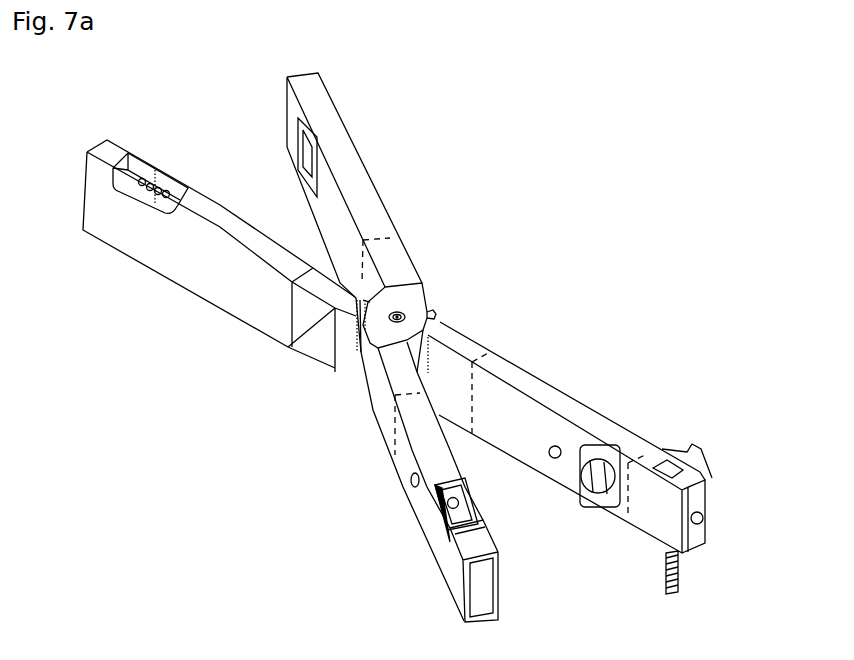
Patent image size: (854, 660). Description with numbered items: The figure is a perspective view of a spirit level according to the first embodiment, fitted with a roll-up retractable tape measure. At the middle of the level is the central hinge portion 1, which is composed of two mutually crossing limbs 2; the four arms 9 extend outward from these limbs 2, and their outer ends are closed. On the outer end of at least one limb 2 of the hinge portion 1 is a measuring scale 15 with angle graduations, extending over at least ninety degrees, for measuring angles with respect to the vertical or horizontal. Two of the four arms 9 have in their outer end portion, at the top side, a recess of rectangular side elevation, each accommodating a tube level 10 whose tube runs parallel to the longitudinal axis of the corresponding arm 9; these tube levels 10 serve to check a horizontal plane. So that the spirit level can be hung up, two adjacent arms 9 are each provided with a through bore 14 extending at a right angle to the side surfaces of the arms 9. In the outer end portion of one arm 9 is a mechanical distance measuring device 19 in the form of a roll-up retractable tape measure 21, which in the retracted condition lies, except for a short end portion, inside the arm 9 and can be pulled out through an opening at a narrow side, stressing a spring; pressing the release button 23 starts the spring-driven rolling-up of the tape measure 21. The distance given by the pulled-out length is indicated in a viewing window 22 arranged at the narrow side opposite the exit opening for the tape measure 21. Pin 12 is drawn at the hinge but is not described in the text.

The central hinge portion 1 is at (418, 302).
The limb 2 is at (413, 285).
The arm 9 is at (118, 150).
The tube level 10 is at (303, 162).
The pin 12 is at (432, 320).
The through bore 14 is at (419, 474).
The measuring scale 15 is at (360, 357).
The mechanical distance measuring device 19 is at (702, 450).
The tape measure 21 is at (672, 594).
The viewing window 22 is at (667, 468).
The release button 23 is at (707, 517).